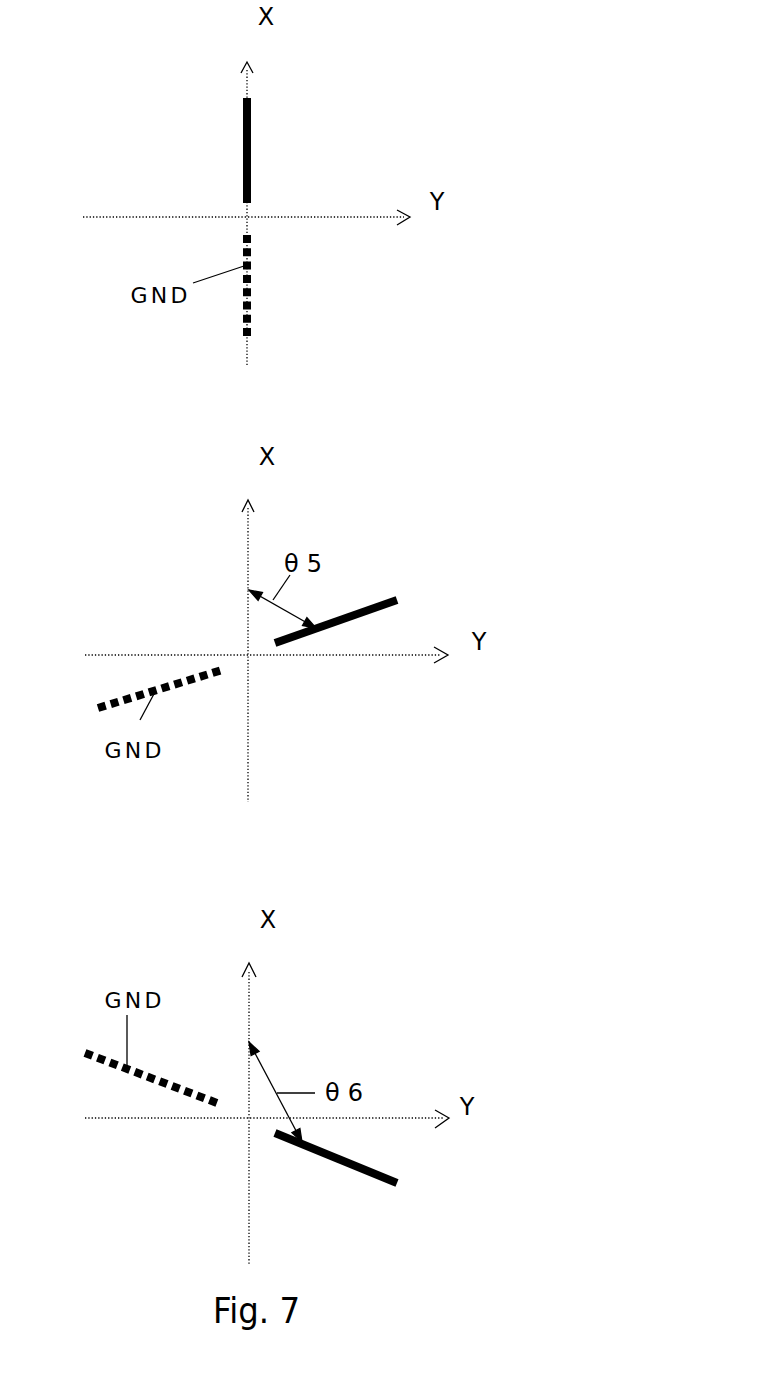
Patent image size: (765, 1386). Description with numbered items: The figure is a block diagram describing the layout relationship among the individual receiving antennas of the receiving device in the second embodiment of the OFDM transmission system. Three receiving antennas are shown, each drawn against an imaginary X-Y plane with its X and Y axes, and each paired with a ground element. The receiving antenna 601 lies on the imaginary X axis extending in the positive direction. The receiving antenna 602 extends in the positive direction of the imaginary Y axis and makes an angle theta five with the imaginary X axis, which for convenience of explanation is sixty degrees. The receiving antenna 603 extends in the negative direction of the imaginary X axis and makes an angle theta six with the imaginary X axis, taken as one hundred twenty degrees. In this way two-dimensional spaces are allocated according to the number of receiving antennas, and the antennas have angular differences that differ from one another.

The receiving antenna 601 is at (250, 148).
The receiving antenna 602 is at (370, 600).
The receiving antenna 603 is at (370, 1178).